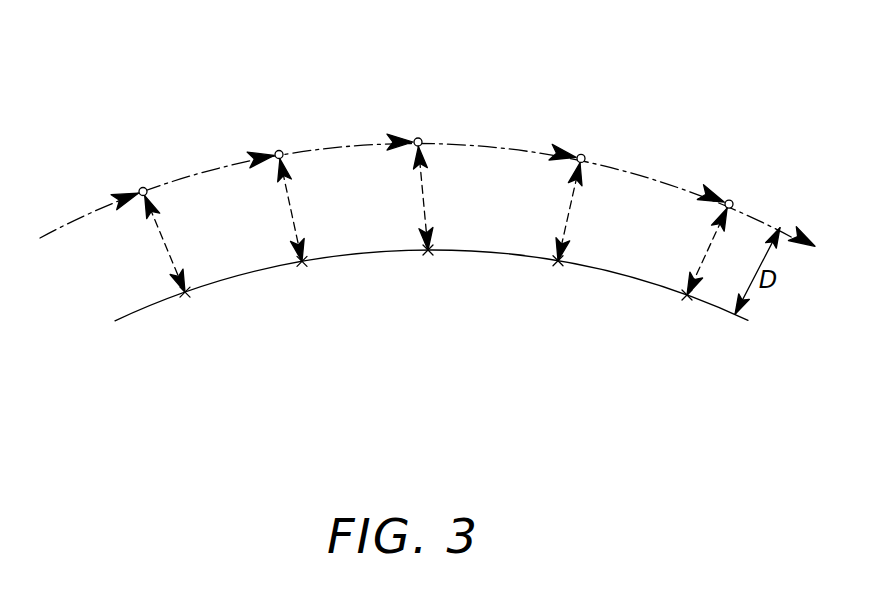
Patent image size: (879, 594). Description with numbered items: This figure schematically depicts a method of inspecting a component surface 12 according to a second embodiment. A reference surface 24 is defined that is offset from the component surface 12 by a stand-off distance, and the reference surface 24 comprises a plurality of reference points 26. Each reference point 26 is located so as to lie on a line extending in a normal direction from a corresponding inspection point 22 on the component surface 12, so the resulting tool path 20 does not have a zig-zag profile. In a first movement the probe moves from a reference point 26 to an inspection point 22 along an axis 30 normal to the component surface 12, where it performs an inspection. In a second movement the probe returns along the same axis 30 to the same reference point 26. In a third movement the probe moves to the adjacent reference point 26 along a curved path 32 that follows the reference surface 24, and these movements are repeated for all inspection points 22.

The component surface 12 is at (707, 304).
The tool path 20 is at (167, 247).
The inspection point 22 is at (300, 260).
The reference surface 24 is at (487, 144).
The reference point 26 is at (143, 187).
The axis 30 is at (172, 262).
The curved path 32 is at (437, 140).